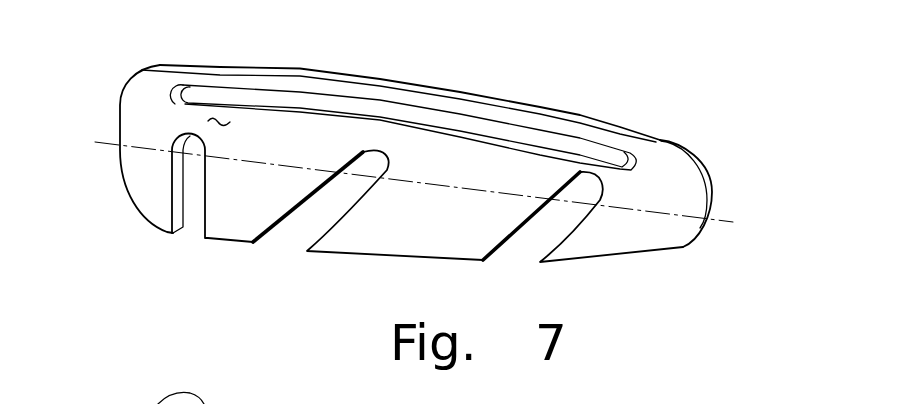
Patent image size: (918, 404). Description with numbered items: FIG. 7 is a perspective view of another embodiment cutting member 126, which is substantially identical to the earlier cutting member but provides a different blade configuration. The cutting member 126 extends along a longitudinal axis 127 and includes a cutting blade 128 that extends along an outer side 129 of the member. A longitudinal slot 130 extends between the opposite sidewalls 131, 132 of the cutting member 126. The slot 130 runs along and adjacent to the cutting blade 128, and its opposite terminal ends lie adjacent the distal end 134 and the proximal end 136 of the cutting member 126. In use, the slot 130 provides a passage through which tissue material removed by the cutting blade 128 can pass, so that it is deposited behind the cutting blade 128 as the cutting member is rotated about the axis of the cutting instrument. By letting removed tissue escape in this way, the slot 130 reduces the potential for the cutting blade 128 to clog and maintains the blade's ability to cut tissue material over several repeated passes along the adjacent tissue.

The cutting member 126 is at (721, 92).
The longitudinal axis 127 is at (722, 222).
The cutting blade 128 is at (460, 98).
The outer side 129 is at (570, 113).
The longitudinal slot 130 is at (320, 107).
The sidewall 131 is at (222, 118).
The sidewall 132 is at (703, 160).
The distal end 134 is at (712, 203).
The proximal end 136 is at (118, 115).